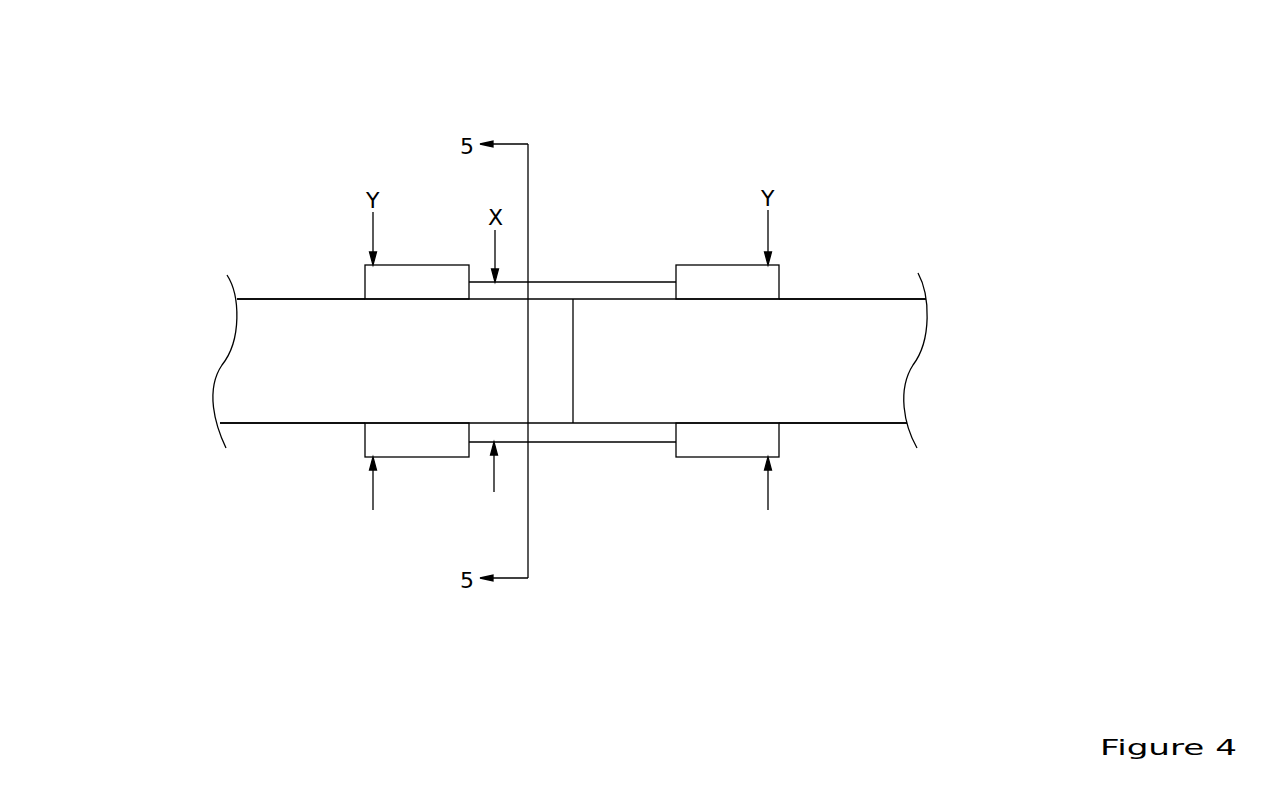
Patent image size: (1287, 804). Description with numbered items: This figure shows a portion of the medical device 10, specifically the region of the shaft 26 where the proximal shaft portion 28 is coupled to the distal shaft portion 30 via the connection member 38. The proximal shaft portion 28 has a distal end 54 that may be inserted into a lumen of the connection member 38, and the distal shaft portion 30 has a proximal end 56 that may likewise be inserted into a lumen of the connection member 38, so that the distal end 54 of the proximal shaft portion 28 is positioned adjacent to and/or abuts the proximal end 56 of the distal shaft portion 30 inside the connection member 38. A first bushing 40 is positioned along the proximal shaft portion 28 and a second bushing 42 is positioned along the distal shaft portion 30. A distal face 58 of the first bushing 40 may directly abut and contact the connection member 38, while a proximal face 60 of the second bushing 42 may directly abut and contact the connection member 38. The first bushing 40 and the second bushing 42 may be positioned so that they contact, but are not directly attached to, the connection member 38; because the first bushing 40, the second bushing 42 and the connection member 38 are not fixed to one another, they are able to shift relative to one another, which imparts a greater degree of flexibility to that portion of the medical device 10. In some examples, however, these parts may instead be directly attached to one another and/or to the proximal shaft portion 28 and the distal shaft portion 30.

The medical device 10 is at (680, 120).
The shaft 26 is at (301, 440).
The proximal shaft portion 28 is at (252, 364).
The distal shaft portion 30 is at (845, 437).
The connection member 38 is at (572, 282).
The first bushing 40 is at (365, 283).
The second bushing 42 is at (780, 282).
The distal end 54 is at (548, 405).
The proximal end 56 is at (590, 403).
The distal face 58 is at (469, 442).
The proximal face 60 is at (676, 452).